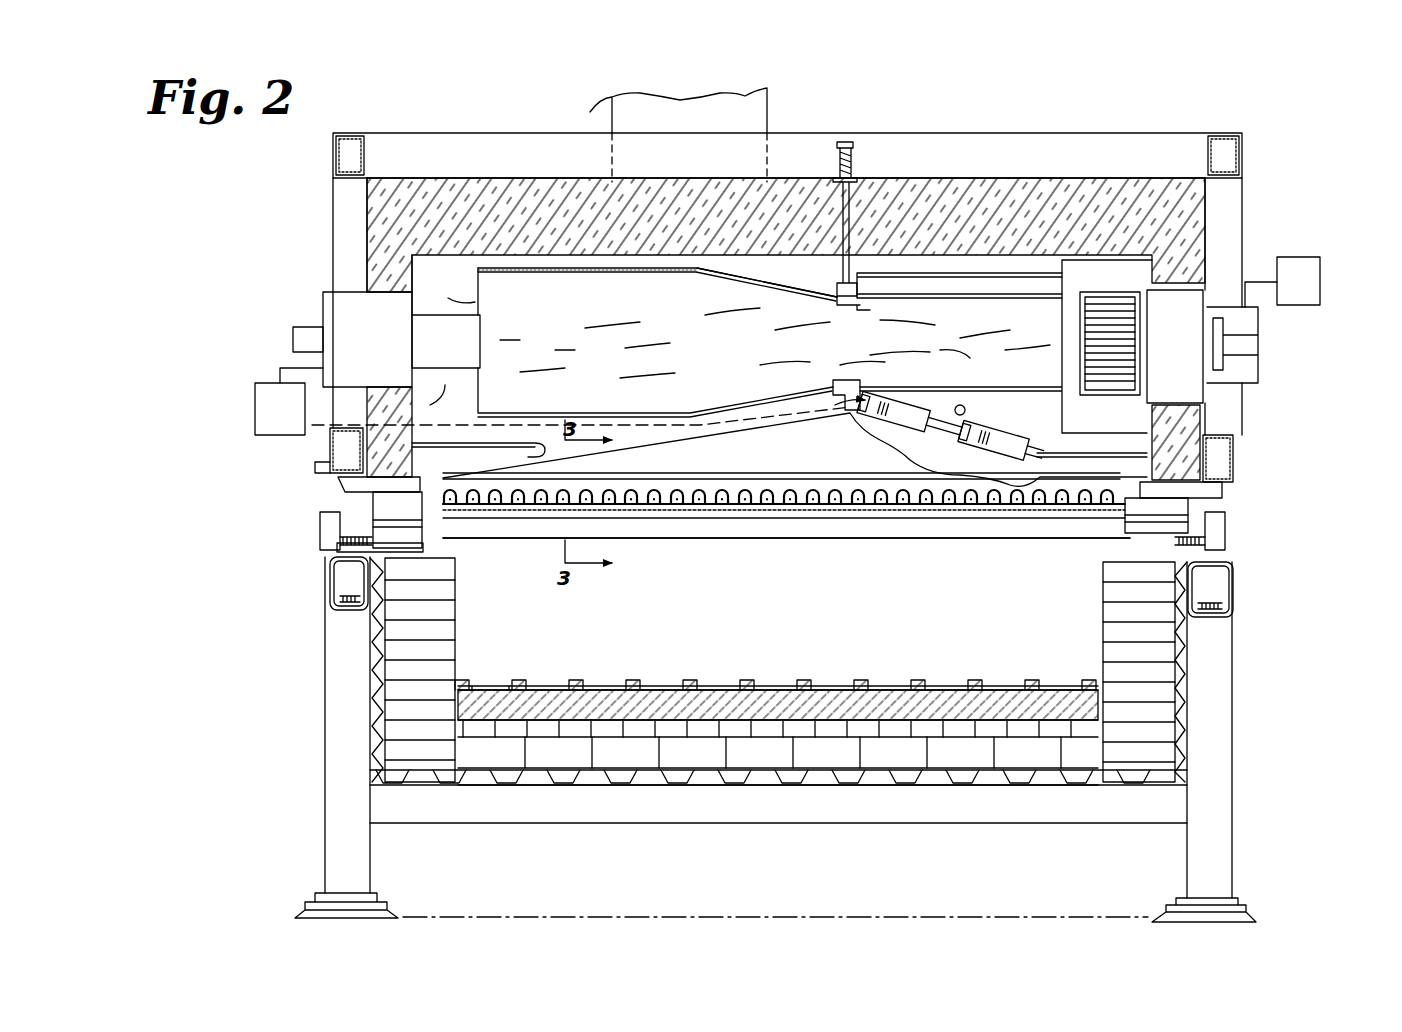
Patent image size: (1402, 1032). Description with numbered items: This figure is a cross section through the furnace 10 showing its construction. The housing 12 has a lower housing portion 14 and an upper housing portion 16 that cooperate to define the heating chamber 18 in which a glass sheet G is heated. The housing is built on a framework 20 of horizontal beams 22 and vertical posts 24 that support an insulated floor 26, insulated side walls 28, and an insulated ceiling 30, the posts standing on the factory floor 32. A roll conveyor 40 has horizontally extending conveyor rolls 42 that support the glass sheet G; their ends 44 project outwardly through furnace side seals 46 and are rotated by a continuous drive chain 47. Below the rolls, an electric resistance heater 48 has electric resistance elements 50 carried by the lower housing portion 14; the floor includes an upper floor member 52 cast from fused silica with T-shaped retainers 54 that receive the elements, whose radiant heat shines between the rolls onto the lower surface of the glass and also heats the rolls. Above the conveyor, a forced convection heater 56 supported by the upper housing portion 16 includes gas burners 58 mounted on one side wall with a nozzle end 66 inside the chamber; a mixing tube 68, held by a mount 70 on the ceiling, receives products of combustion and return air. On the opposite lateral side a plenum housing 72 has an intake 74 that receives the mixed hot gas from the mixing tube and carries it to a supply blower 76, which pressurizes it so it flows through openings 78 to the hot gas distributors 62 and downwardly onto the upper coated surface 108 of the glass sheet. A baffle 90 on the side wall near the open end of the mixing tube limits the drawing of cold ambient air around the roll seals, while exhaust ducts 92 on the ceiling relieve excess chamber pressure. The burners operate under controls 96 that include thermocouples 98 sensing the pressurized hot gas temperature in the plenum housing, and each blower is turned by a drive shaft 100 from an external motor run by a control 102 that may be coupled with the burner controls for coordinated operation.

The furnace 10 is at (1298, 134).
The housing 12 is at (1245, 195).
The lower housing portion 14 is at (320, 748).
The upper housing portion 16 is at (283, 232).
The heating chamber 18 is at (532, 266).
The framework 20 is at (1238, 700).
The horizontal beams 22 is at (370, 135).
The vertical posts 24 is at (333, 200).
The insulated floor 26 is at (802, 760).
The insulated side walls 28 is at (380, 410).
The insulated ceiling 30 is at (817, 197).
The factory floor 32 is at (607, 917).
The roll conveyor 40 is at (942, 540).
The conveyor rolls 42 is at (775, 518).
The ends 44 is at (327, 530).
The furnace side seals 46 is at (387, 520).
The continuous drive chain 47 is at (350, 606).
The electric resistance heater 48 is at (902, 665).
The electric resistance elements 50 is at (730, 684).
The upper floor member 52 is at (655, 705).
The T-shaped retainers 54 is at (697, 686).
The forced convection heater 56 is at (787, 266).
The gas burners 58 is at (347, 300).
The hot gas distributors 62 is at (737, 432).
The nozzle end 66 is at (500, 322).
The mixing tube 68 is at (492, 262).
The mount 70 is at (880, 255).
The plenum housing 72 is at (987, 273).
The intake 74 is at (937, 298).
The supply blower 76 is at (1093, 292).
The openings 78 is at (892, 430).
The baffle 90 is at (507, 440).
The exhaust ducts 92 is at (607, 110).
The controls 96 is at (265, 392).
The thermocouples 98 is at (962, 405).
The drive shaft 100 is at (1252, 350).
The control 102 is at (1300, 258).
The upper coated surface 108 is at (852, 405).
The glass sheet G is at (824, 490).